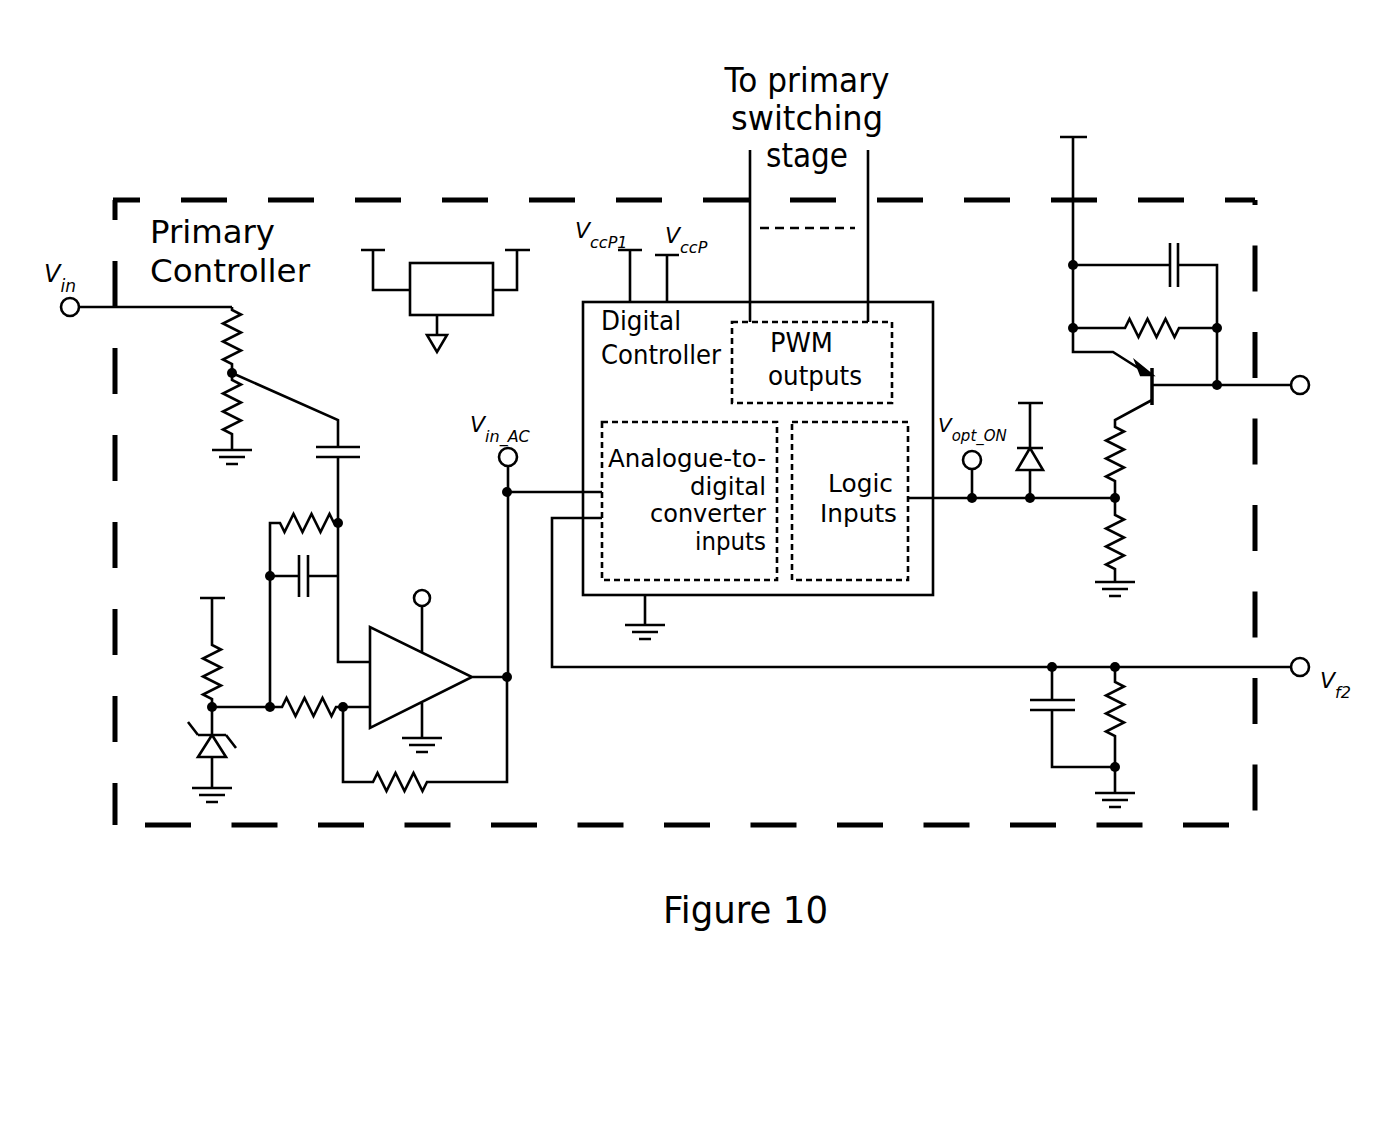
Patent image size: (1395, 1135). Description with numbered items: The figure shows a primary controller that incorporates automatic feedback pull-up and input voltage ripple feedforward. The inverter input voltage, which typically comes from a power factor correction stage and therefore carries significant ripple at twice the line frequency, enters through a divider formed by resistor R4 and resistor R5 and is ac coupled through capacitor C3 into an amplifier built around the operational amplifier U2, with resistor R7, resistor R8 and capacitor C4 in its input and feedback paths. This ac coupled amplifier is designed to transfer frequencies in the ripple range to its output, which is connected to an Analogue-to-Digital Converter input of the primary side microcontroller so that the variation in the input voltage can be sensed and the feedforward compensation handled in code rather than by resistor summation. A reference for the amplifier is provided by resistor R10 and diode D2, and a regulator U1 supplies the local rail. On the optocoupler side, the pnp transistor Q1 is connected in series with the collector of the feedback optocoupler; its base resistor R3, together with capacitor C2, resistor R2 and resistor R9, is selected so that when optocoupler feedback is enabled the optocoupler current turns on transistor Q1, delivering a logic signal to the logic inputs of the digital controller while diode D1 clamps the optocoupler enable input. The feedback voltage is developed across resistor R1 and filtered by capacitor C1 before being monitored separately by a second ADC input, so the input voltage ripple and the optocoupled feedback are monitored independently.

The resistor R1 is at (1129, 737).
The resistor R2 is at (1134, 449).
The base resistor R3 is at (1145, 349).
The resistor R4 is at (211, 340).
The resistor R5 is at (217, 418).
The resistor R7 is at (320, 730).
The resistor R8 is at (425, 734).
The resistor R9 is at (1129, 547).
The resistor R10 is at (211, 634).
The capacitor C1 is at (1060, 717).
The capacitor C2 is at (1145, 299).
The capacitor C3 is at (307, 517).
The capacitor C4 is at (304, 598).
The diode D1 is at (1034, 435).
The zener diode D2 is at (199, 754).
The voltage regulator U1 is at (434, 285).
The operational amplifier U2 is at (438, 657).
The pnp transistor Q1 is at (1190, 273).